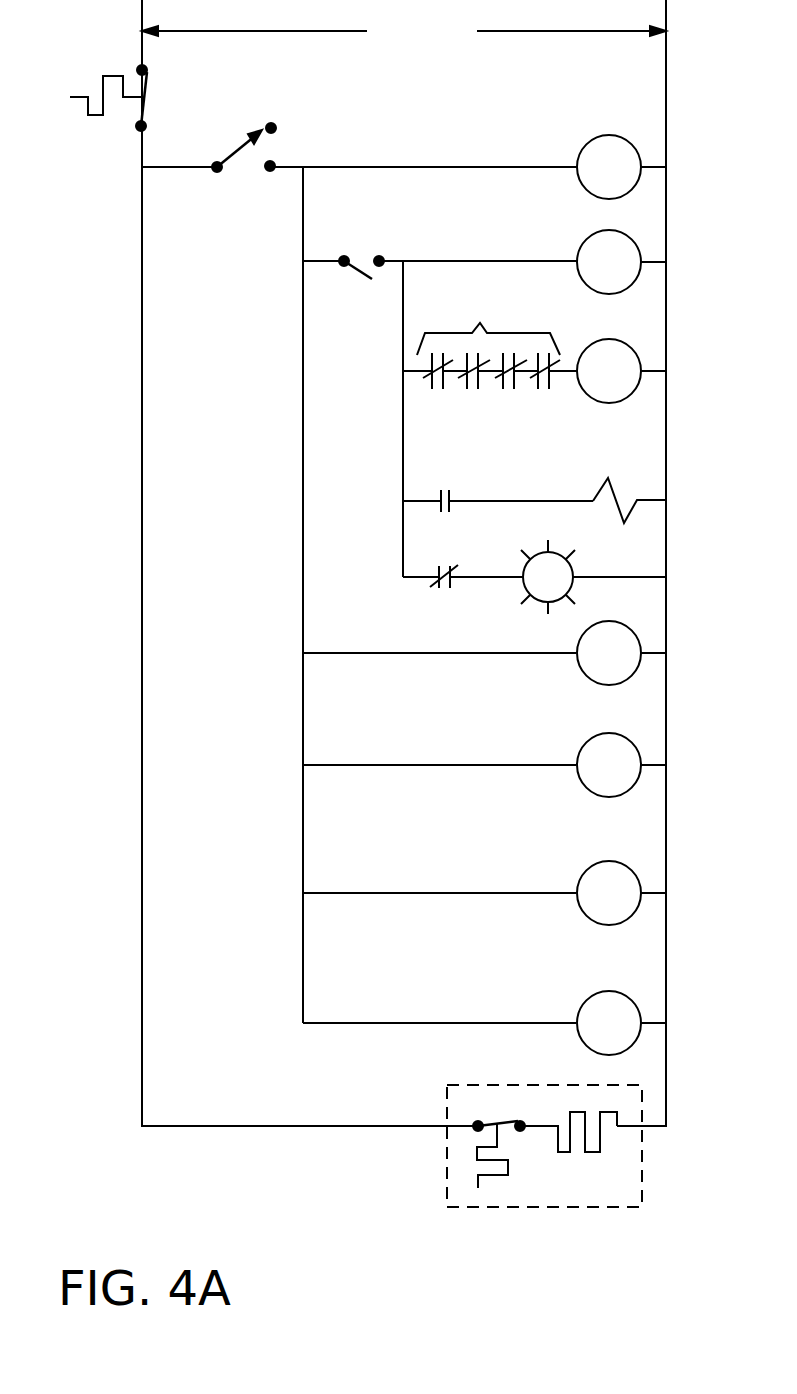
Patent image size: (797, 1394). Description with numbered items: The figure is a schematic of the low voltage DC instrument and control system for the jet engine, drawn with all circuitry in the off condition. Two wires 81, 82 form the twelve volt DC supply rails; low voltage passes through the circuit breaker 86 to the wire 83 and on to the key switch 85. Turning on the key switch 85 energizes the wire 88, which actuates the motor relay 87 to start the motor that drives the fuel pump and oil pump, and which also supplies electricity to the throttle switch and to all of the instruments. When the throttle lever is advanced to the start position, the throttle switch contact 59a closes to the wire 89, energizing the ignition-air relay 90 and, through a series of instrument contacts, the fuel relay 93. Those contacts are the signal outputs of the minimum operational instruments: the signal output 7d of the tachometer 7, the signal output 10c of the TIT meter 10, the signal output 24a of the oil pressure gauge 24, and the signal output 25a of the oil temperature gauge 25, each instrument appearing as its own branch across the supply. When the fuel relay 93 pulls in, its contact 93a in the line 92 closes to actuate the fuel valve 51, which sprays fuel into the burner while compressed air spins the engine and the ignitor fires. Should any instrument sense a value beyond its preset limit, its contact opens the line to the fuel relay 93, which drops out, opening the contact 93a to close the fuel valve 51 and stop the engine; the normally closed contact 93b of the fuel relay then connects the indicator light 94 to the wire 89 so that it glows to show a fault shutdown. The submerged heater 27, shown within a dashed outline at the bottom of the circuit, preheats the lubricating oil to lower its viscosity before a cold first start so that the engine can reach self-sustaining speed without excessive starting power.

The wire 81 is at (142, 38).
The wire 82 is at (666, 52).
The wire 83 is at (217, 170).
The key switch 85 is at (229, 150).
The circuit breaker 86 is at (147, 77).
The motor relay 87 is at (621, 167).
The wire 88 is at (302, 335).
The wire 89 is at (528, 261).
The ignition-air relay 90 is at (621, 262).
The fuel relay 93 is at (621, 371).
The throttle switch contact 59a is at (378, 208).
The tachometer signal output 7d is at (442, 386).
The TIT meter signal output 10c is at (475, 386).
The oil pressure gauge signal output 24a is at (500, 386).
The oil temperature gauge signal output 25a is at (544, 386).
The fuel relay contact 93a is at (438, 490).
The line 92 is at (497, 501).
The fuel valve 51 is at (628, 488).
The normally closed fuel relay contact 93b is at (448, 589).
The indicator light 94 is at (452, 577).
The tachometer 7 is at (621, 653).
The oil temperature gauge 25 is at (621, 765).
The oil pressure gauge 24 is at (621, 893).
The TIT meter 10 is at (621, 1023).
The submerged heater 27 is at (642, 1207).